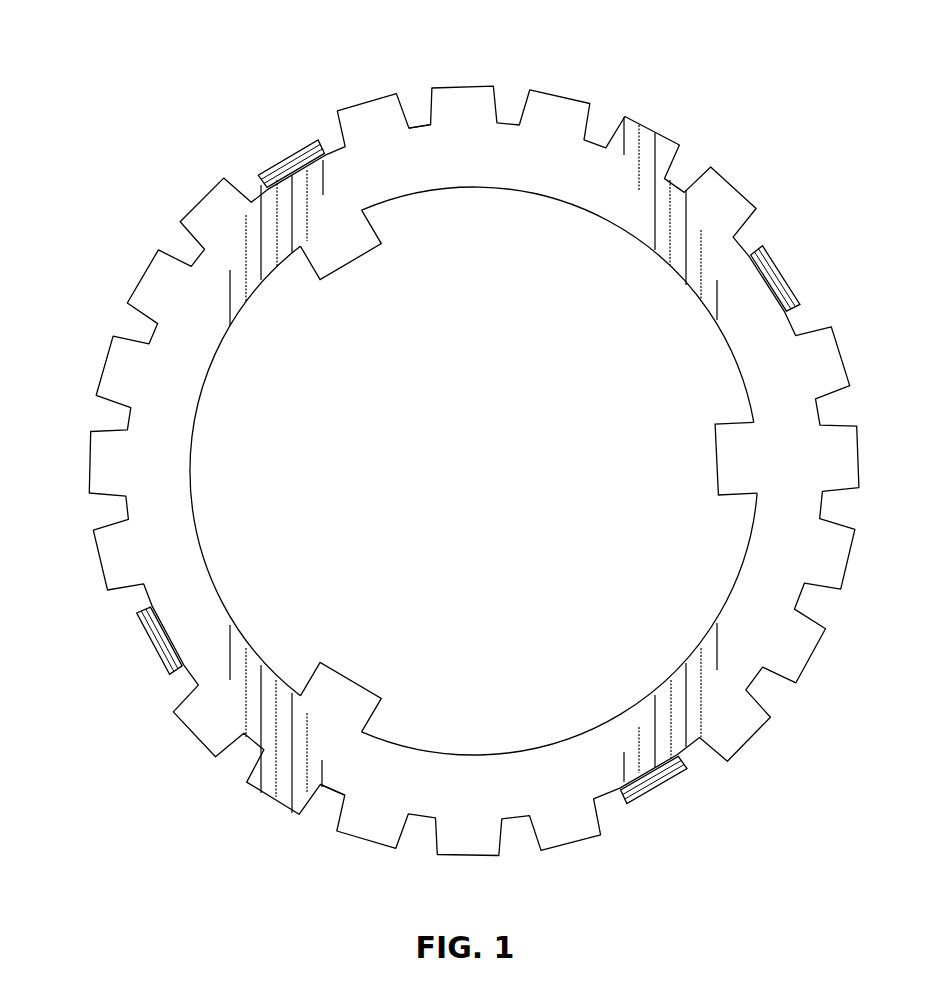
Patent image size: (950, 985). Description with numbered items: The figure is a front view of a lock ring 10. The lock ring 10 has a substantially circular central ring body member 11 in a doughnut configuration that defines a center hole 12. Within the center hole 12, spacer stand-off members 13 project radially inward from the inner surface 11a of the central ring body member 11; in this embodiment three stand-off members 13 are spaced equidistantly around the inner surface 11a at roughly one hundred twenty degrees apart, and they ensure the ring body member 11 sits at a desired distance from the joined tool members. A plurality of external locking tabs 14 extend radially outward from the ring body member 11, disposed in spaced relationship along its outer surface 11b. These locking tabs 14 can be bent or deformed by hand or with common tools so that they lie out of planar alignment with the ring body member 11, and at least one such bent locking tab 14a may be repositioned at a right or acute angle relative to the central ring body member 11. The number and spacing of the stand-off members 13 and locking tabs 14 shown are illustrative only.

The lock ring 10 is at (651, 112).
The central ring body member 11 is at (662, 207).
The inner surface 11a is at (541, 195).
The outer surface 11b is at (416, 124).
The center hole 12 is at (466, 471).
The spacer stand-off member 13 is at (345, 243).
The external locking tab 14 is at (212, 203).
The bent locking tab 14a is at (290, 150).